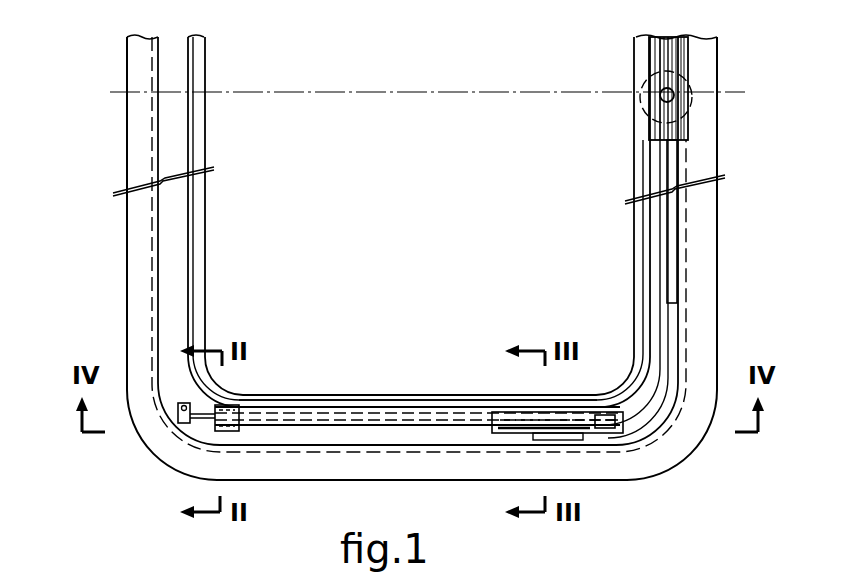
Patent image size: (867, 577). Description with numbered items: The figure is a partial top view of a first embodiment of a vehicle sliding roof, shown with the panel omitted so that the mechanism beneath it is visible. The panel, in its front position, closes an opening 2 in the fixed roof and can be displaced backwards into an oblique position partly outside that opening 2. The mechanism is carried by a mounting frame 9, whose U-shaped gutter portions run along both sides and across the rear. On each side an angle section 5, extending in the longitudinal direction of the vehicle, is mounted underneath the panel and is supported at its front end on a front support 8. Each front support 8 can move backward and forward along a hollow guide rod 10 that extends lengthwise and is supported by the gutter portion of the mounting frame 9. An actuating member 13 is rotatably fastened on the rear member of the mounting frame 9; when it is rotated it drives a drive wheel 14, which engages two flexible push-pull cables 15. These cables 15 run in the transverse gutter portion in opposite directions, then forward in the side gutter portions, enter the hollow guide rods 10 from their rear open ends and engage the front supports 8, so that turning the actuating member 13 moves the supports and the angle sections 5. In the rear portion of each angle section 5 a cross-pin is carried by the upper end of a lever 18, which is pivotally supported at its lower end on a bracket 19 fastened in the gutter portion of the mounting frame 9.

The opening 2 is at (275, 232).
The angle section 5 is at (360, 408).
The front support 8 is at (243, 418).
The mounting frame 9 is at (133, 224).
The hollow guide rod 10 is at (325, 418).
The actuating member 13 is at (690, 83).
The drive wheel 14 is at (676, 100).
The push-pull cable 15 is at (672, 252).
The lever 18 is at (515, 418).
The bracket 19 is at (553, 424).